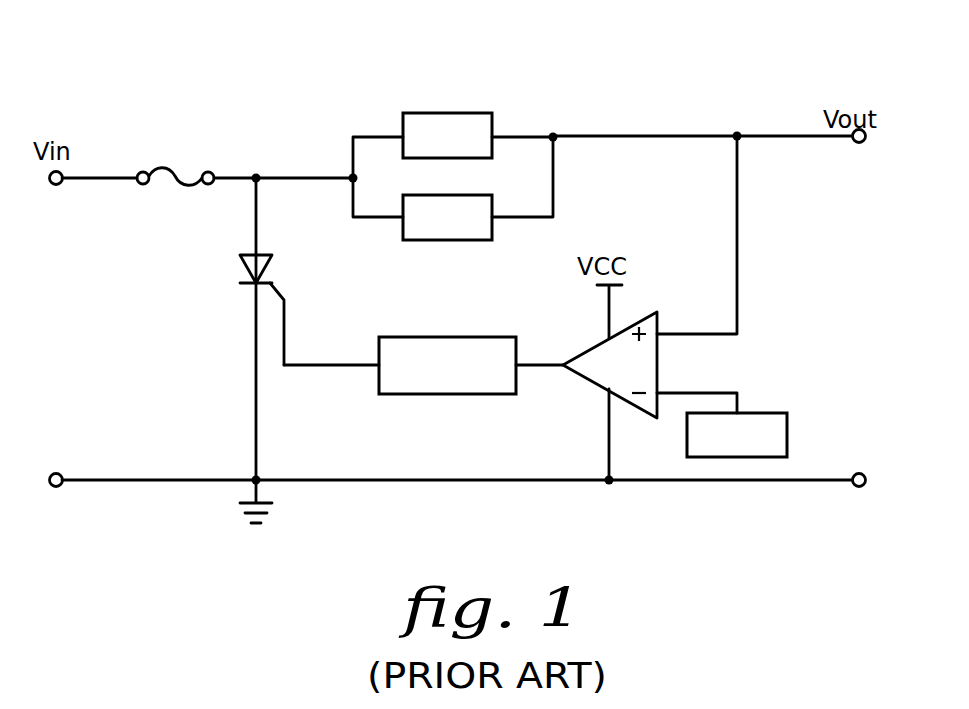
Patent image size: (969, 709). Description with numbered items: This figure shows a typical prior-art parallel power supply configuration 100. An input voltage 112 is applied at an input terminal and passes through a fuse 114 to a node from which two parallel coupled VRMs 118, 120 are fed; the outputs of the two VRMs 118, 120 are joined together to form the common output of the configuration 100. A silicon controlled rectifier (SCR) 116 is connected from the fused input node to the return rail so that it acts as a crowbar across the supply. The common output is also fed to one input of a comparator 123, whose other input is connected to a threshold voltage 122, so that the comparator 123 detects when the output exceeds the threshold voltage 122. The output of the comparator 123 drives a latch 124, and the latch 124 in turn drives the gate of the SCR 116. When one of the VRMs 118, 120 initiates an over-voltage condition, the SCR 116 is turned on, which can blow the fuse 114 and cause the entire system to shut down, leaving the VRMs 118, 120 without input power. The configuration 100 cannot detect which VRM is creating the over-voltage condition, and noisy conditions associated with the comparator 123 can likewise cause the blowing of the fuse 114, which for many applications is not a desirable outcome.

The parallel power supply configuration 100 is at (273, 58).
The input voltage 112 is at (52, 186).
The fuse 114 is at (175, 180).
The silicon controlled rectifier (SCR) 116 is at (252, 273).
The VRM 118 is at (459, 113).
The VRM 120 is at (440, 240).
The threshold voltage 122 is at (765, 413).
The comparator 123 is at (657, 312).
The latch 124 is at (487, 394).